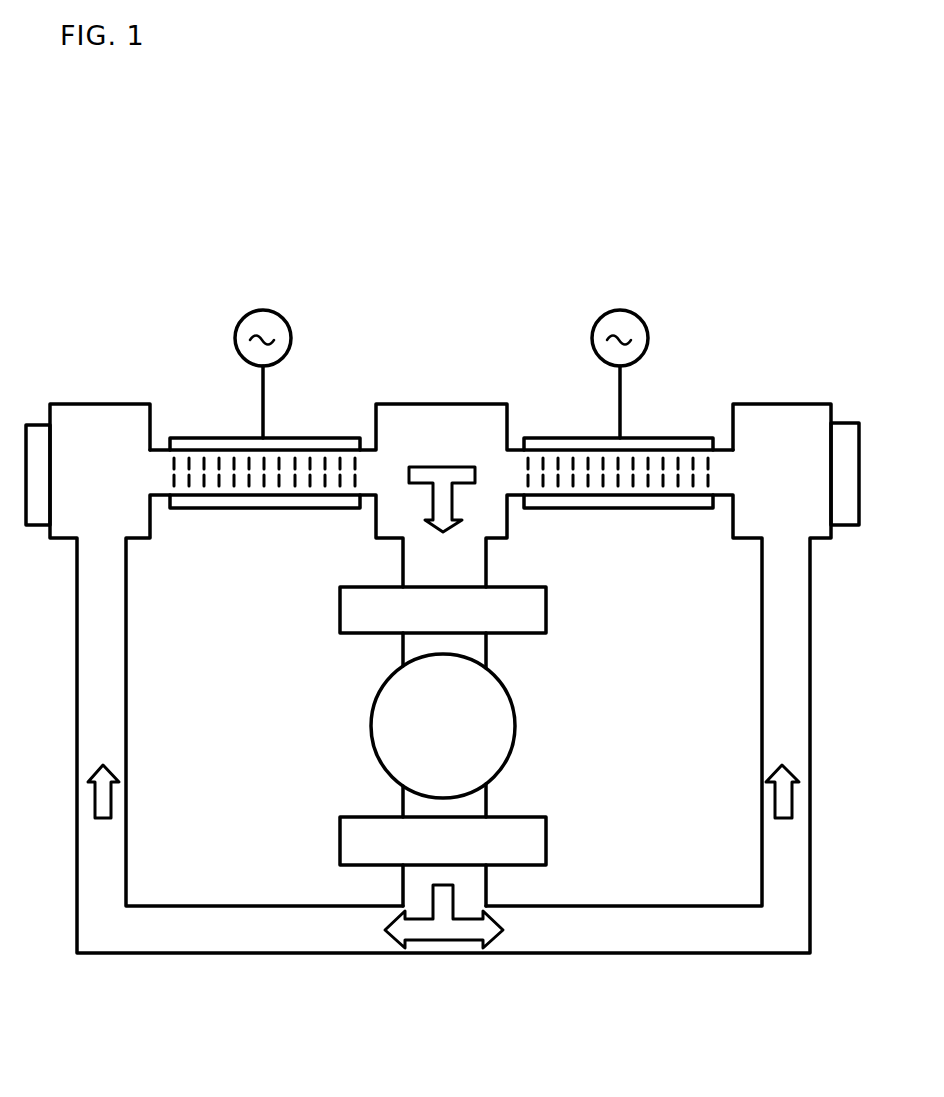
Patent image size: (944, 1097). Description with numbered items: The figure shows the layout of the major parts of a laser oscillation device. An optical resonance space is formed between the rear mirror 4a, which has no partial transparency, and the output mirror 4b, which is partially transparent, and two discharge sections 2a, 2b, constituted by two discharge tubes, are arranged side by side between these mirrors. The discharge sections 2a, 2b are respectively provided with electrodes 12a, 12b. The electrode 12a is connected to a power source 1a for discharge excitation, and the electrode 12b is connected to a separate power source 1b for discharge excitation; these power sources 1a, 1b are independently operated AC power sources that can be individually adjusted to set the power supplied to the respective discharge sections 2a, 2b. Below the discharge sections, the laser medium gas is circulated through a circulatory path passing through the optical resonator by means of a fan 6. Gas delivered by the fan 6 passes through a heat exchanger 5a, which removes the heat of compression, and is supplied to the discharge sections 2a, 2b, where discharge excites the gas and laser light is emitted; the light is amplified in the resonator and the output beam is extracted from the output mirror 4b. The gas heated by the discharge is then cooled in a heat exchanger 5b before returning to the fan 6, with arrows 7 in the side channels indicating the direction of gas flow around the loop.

The power source for discharge excitation 1a is at (265, 310).
The power source for discharge excitation 1b is at (621, 310).
The discharge section 2a is at (245, 439).
The discharge section 2b is at (643, 443).
The rear mirror 4a is at (35, 423).
The output mirror 4b is at (844, 423).
The heat exchanger 5a is at (531, 838).
The heat exchanger 5b is at (529, 613).
The fan 6 is at (503, 728).
The flow direction 7 is at (96, 797).
The electrode 12a is at (250, 508).
The electrode 12b is at (668, 508).